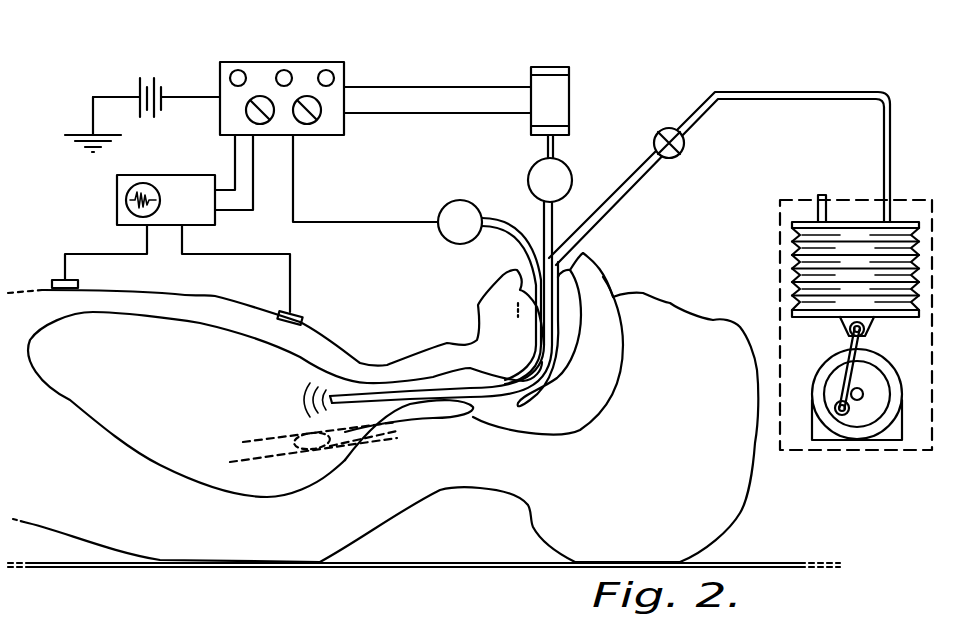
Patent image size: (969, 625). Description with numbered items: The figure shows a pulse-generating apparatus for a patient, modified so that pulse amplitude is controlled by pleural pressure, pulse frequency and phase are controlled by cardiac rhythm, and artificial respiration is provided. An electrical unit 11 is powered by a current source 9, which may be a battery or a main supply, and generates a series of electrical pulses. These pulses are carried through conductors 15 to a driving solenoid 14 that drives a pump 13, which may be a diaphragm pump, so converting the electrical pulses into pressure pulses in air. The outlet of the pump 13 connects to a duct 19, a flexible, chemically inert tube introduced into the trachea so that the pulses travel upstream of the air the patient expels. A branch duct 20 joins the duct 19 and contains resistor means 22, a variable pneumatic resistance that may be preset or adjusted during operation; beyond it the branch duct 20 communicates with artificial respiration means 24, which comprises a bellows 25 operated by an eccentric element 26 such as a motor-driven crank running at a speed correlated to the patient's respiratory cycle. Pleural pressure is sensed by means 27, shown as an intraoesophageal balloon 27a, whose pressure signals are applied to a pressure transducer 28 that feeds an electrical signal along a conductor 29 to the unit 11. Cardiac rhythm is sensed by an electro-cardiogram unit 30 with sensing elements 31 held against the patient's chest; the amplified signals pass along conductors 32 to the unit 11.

The current source 9 is at (144, 80).
The electrical unit 11 is at (300, 62).
The pump 13 is at (562, 172).
The driving solenoid 14 is at (558, 100).
The conductors 15 is at (380, 110).
The duct 19 is at (546, 226).
The branch duct 20 is at (617, 198).
The resistor means 22 is at (662, 129).
The artificial respiration means 24 is at (768, 293).
The bellows 25 is at (797, 237).
The eccentric element 26 is at (878, 362).
The pleural pressure sensing means 27 is at (473, 413).
The intraoesophageal balloon 27a is at (291, 447).
The pressure transducer 28 is at (460, 200).
The conductor 29 is at (338, 218).
The electro-cardiogram unit 30 is at (120, 190).
The sensing elements 31 is at (68, 280).
The conductors 32 is at (248, 163).